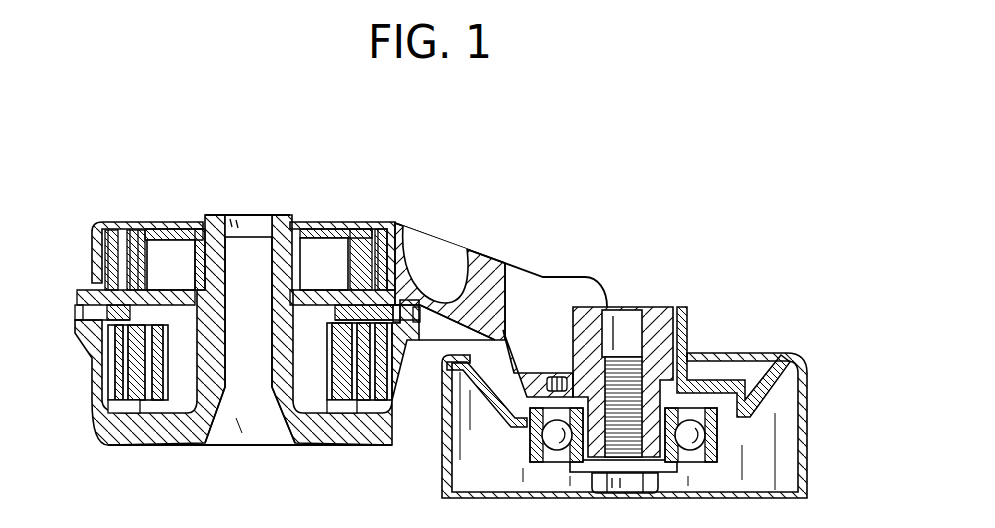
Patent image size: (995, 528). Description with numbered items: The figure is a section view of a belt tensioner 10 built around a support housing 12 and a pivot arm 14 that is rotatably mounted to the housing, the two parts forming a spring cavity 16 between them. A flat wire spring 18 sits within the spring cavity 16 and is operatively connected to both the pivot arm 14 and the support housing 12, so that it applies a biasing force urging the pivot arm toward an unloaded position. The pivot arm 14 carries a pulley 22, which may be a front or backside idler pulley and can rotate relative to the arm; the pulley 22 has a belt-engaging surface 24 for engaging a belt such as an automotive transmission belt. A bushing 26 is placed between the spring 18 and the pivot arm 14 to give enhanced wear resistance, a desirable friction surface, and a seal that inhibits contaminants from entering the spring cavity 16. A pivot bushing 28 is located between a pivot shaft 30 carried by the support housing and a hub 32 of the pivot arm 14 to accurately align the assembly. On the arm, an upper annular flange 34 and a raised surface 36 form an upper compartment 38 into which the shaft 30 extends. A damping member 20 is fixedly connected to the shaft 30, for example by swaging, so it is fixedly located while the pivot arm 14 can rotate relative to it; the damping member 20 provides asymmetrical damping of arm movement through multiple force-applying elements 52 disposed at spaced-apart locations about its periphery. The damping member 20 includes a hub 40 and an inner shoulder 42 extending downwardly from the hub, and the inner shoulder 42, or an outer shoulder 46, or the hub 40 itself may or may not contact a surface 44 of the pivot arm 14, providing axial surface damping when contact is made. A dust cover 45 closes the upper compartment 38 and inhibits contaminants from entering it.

The belt tensioner 10 is at (586, 163).
The support housing 12 is at (118, 430).
The pivot arm 14 is at (490, 275).
The spring cavity 16 is at (115, 408).
The flat wire spring 18 is at (102, 372).
The damping member 20 is at (333, 300).
The pulley 22 is at (805, 420).
The belt-engaging surface 24 is at (808, 453).
The bushing 26 is at (115, 297).
The pivot bushing 28 is at (308, 330).
The pivot shaft 30 is at (212, 223).
The hub 32 is at (325, 335).
The upper annular flange 34 is at (103, 248).
The raised surface 36 is at (412, 250).
The upper compartment 38 is at (312, 252).
The hub 40 is at (172, 238).
The inner shoulder 42 is at (198, 245).
The surface 44 is at (377, 232).
The dust cover 45 is at (318, 230).
The outer shoulder 46 is at (140, 250).
The force-applying elements 52 is at (118, 240).